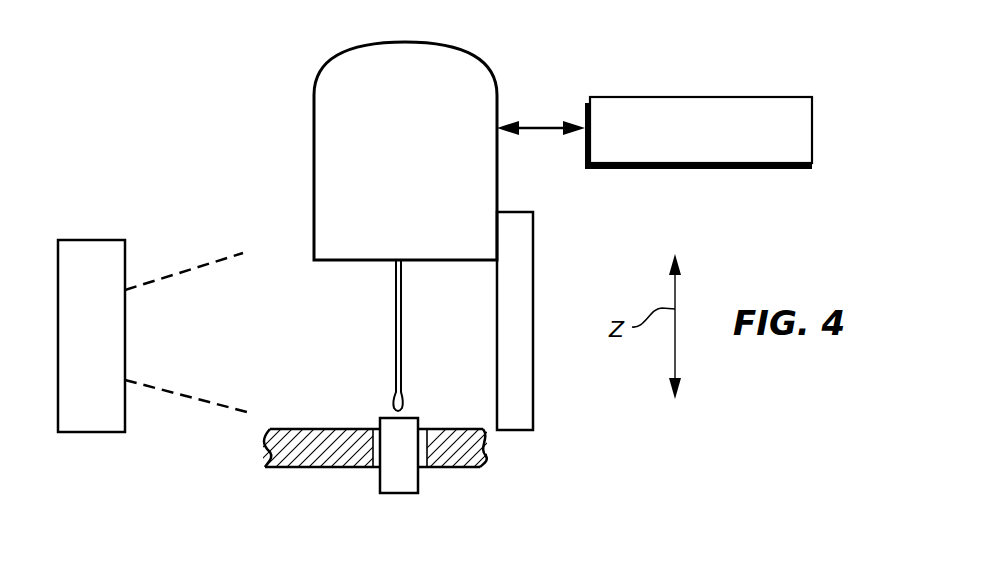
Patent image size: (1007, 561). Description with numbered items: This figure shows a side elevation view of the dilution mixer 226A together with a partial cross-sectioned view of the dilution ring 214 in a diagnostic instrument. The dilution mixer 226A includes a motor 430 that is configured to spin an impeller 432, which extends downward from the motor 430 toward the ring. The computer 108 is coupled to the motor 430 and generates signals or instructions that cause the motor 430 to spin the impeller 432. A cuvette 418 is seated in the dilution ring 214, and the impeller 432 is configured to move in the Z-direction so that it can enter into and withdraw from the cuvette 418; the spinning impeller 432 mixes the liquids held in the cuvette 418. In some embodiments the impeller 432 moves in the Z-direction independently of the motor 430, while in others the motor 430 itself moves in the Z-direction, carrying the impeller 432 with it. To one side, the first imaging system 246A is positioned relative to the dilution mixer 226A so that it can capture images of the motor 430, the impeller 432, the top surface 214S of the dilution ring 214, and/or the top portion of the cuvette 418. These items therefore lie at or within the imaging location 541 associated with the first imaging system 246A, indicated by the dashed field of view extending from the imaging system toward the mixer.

The dilution mixer 226A is at (335, 143).
The motor 430 is at (430, 138).
The impeller 432 is at (393, 340).
The computer 108 is at (697, 87).
The first imaging system 246A is at (87, 228).
The imaging location 541 is at (300, 311).
The dilution ring 214 is at (339, 466).
The top surface 214S is at (298, 428).
The cuvette 418 is at (412, 418).